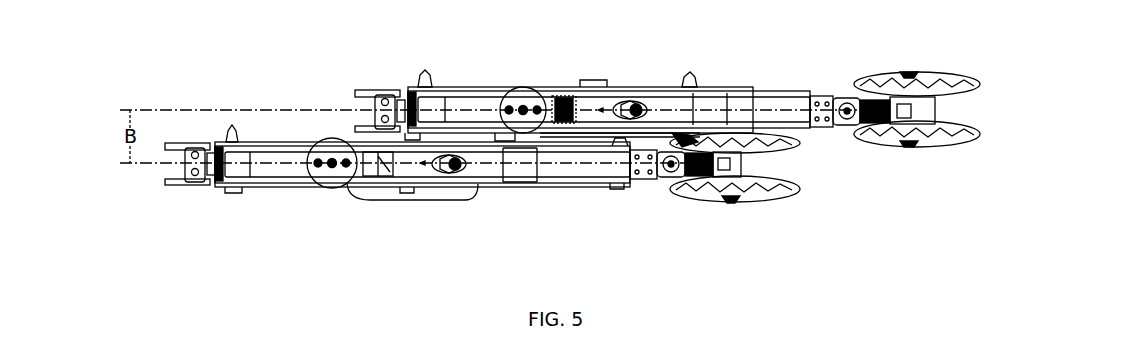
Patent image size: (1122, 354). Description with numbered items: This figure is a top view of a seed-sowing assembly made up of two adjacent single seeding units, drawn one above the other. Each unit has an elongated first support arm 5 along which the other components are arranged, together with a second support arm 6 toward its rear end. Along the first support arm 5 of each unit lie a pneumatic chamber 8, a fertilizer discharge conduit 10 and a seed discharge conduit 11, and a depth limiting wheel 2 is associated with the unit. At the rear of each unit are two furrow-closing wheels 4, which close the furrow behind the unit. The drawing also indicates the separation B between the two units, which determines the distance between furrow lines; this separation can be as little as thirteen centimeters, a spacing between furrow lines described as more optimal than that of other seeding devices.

The depth limiting wheel 2 is at (374, 195).
The furrow-closing wheels 4 is at (767, 151).
The first support arm 5 is at (263, 184).
The second support arm 6 is at (500, 188).
The pneumatic chamber 8 is at (329, 186).
The fertilizer discharge conduit 10 is at (381, 176).
The seed discharge conduit 11 is at (452, 172).